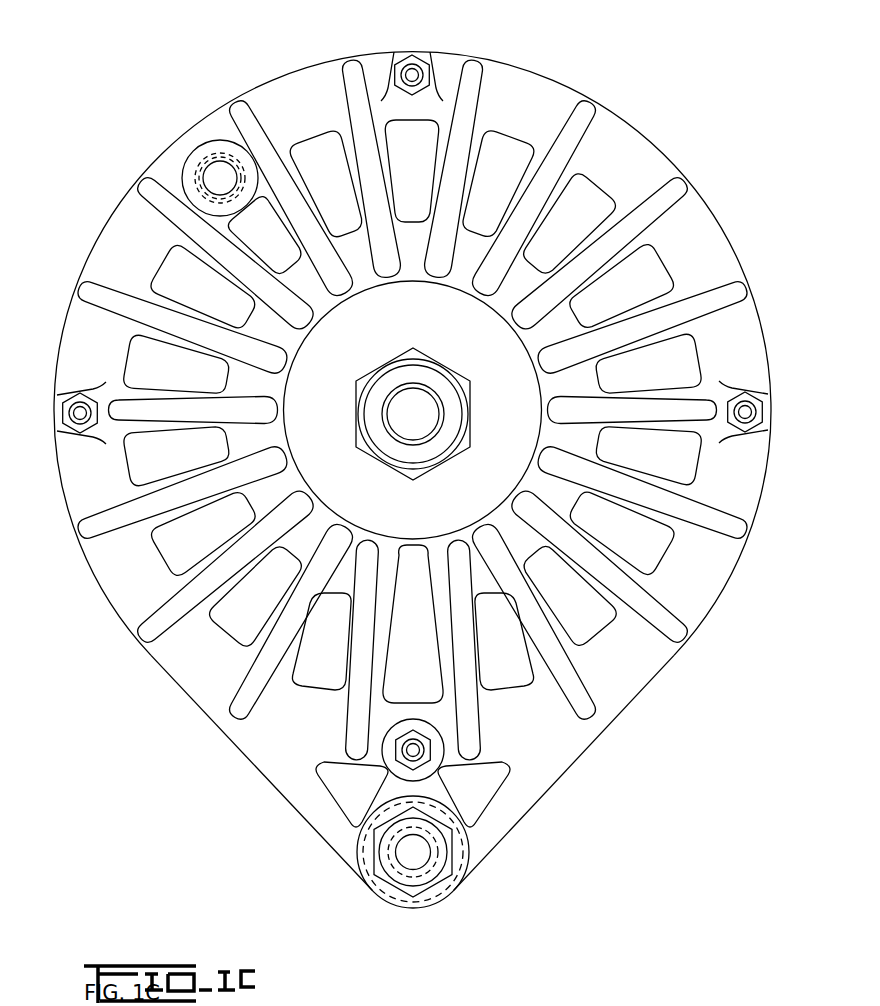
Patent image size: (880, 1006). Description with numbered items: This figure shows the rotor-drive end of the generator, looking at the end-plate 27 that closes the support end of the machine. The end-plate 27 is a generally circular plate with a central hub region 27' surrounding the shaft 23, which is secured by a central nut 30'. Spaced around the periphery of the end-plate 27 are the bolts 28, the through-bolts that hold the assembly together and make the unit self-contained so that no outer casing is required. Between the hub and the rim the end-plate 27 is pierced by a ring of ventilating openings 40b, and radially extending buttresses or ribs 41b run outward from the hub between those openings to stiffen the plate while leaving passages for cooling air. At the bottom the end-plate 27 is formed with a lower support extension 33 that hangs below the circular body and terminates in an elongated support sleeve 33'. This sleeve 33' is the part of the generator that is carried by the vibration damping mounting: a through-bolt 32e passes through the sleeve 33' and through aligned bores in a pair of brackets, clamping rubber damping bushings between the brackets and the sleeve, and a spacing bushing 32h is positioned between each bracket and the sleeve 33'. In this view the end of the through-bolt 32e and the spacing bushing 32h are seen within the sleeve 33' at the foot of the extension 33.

The end-plate 27 is at (411, 354).
The hub of end frame 27' is at (413, 410).
The shaft 23 is at (426, 409).
The shaft nut 30' is at (413, 403).
The bolts 28 is at (410, 66).
The ventilating openings 40b is at (333, 150).
The radially extending buttresses or ribs 41b is at (478, 97).
The lower extension 33 is at (412, 772).
The support sleeve 33' is at (437, 852).
The spacing bushing 32h is at (400, 866).
The through-bolt 32e is at (417, 858).